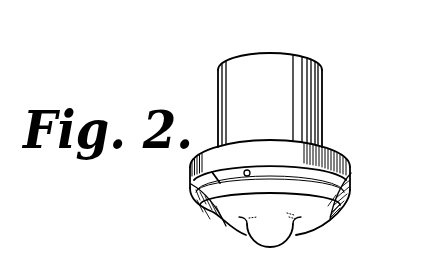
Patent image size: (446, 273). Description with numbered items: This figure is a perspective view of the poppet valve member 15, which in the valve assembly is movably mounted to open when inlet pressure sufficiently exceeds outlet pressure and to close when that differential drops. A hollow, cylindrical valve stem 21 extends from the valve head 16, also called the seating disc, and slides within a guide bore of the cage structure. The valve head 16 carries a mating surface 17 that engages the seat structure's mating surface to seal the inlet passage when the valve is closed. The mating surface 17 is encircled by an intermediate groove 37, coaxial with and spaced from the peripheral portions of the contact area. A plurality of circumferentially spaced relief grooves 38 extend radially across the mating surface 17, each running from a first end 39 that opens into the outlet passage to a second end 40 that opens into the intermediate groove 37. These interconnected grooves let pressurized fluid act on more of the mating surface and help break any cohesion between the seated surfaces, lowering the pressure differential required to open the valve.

The poppet valve member 15 is at (308, 57).
The valve stem 21 is at (322, 102).
The valve head 16 is at (352, 174).
The mating surface 17 is at (352, 202).
The intermediate groove 37 is at (245, 177).
The relief grooves 38 is at (202, 192).
The first ends 39 is at (193, 175).
The second ends 40 is at (201, 208).